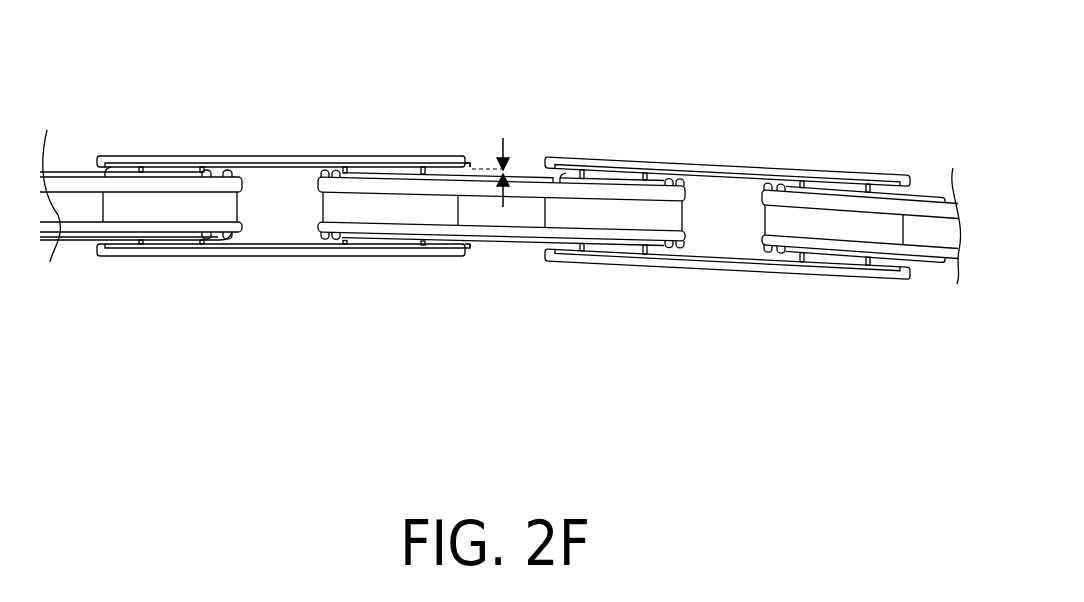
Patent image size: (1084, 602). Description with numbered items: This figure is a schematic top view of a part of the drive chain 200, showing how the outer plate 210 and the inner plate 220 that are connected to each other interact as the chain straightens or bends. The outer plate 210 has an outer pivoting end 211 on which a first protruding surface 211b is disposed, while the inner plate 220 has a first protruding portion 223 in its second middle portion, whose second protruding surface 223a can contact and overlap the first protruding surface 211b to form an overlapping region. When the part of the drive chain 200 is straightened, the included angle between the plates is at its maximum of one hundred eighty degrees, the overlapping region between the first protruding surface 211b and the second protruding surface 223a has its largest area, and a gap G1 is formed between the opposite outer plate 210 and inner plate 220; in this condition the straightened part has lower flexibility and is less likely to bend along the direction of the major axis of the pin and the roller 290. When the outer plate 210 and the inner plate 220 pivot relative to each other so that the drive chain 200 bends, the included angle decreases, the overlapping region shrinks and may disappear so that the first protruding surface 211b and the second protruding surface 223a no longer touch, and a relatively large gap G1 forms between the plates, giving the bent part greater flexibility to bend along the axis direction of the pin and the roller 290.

The drive chain 200 is at (143, 67).
The outer plate 210 is at (280, 156).
The inner plate 220 is at (378, 178).
The roller 290 is at (170, 212).
The outer pivoting end 211 is at (468, 176).
The first protruding surface 211b is at (110, 174).
The first protruding portion 223 is at (517, 175).
The second protruding surface 223a is at (470, 247).
The gap G1 is at (505, 140).